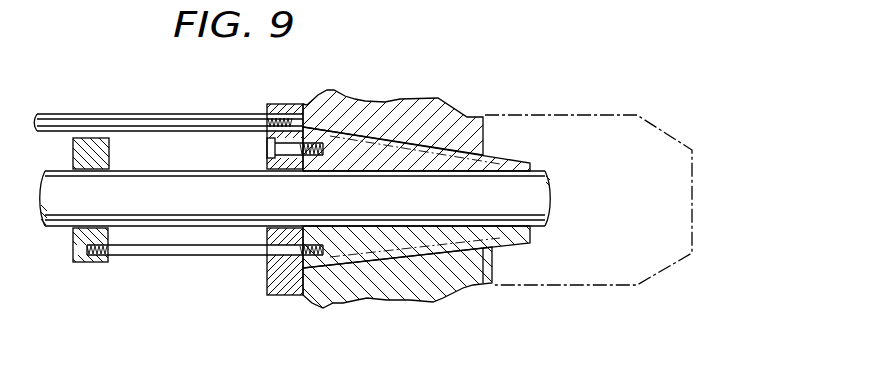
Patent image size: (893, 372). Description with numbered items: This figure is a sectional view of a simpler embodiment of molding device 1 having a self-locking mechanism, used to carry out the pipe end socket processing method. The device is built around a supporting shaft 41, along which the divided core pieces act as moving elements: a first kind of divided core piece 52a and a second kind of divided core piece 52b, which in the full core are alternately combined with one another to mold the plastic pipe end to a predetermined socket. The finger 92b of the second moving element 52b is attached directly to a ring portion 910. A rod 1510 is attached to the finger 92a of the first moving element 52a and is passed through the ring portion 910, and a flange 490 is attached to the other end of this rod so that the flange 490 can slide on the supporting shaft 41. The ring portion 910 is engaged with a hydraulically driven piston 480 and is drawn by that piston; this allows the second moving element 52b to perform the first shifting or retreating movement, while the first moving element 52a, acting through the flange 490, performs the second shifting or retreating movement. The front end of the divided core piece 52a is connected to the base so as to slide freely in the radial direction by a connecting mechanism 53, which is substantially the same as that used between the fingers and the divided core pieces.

The coupling assembly 1 is at (337, 315).
The supporting shaft 41 is at (180, 192).
The connecting mechanism 53 is at (485, 283).
The first kind of divided core piece 52a is at (417, 300).
The second kind of divided core piece 52b is at (428, 100).
The finger of first moving element 92a is at (375, 247).
The finger of second moving element 92b is at (377, 155).
The hydraulically driven piston 480 is at (146, 116).
The flange 490 is at (80, 262).
The ring portion 910 is at (283, 103).
The rod 1510 is at (193, 250).